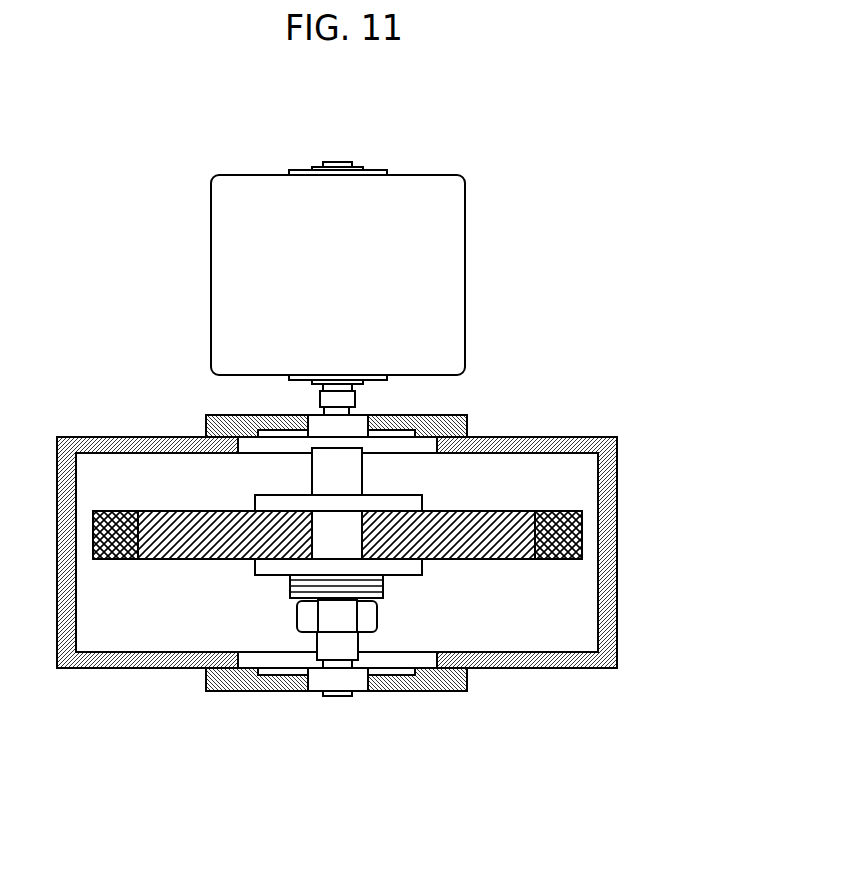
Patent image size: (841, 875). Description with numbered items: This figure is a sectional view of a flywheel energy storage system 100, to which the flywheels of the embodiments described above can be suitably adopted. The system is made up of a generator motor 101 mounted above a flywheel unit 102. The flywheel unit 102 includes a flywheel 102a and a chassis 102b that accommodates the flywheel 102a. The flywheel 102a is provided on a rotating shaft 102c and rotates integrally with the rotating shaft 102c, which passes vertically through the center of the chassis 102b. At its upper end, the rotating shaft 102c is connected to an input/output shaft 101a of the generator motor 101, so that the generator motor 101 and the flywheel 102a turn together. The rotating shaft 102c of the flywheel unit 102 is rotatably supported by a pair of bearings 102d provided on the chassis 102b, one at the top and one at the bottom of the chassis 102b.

The flywheel energy storage system 100 is at (560, 192).
The generator motor 101 is at (235, 173).
The input/output shaft 101a is at (342, 390).
The flywheel unit 102 is at (585, 435).
The flywheel 102a is at (152, 510).
The chassis 102b is at (617, 533).
The rotating shaft 102c is at (365, 477).
The bearings 102d is at (327, 428).